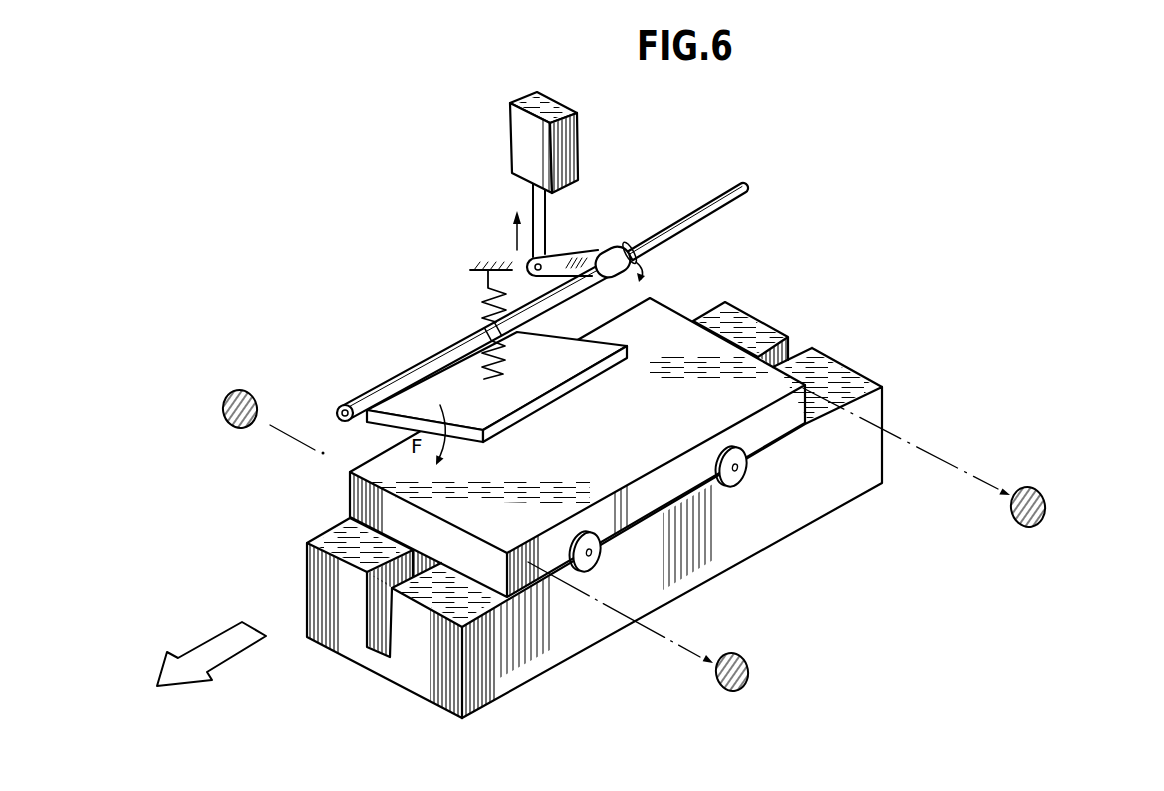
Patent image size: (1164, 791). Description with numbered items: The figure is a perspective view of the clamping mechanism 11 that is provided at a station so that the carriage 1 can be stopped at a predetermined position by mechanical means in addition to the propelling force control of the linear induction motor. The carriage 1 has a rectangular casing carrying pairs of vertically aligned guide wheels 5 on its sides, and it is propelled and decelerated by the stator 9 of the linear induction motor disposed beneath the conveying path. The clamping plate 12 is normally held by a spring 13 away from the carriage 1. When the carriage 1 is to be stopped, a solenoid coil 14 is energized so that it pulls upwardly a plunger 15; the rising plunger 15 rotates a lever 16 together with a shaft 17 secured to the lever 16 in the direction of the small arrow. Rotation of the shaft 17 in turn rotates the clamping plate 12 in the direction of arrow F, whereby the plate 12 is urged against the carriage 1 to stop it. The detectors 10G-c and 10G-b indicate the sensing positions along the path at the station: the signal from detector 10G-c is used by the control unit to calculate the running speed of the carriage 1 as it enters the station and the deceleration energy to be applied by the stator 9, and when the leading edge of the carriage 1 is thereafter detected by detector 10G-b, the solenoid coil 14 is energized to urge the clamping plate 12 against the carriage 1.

The carriage 1 is at (668, 330).
The guide wheels 5 is at (602, 553).
The stator 9 is at (853, 382).
The clamping mechanism 11 is at (415, 350).
The clamping plate 12 is at (560, 365).
The spring 13 is at (483, 313).
The solenoid coil 14 is at (570, 153).
The plunger 15 is at (538, 200).
The lever 16 is at (595, 252).
The shaft 17 is at (695, 215).
The detector 10G-b is at (248, 392).
The detector 10G-c is at (1045, 493).